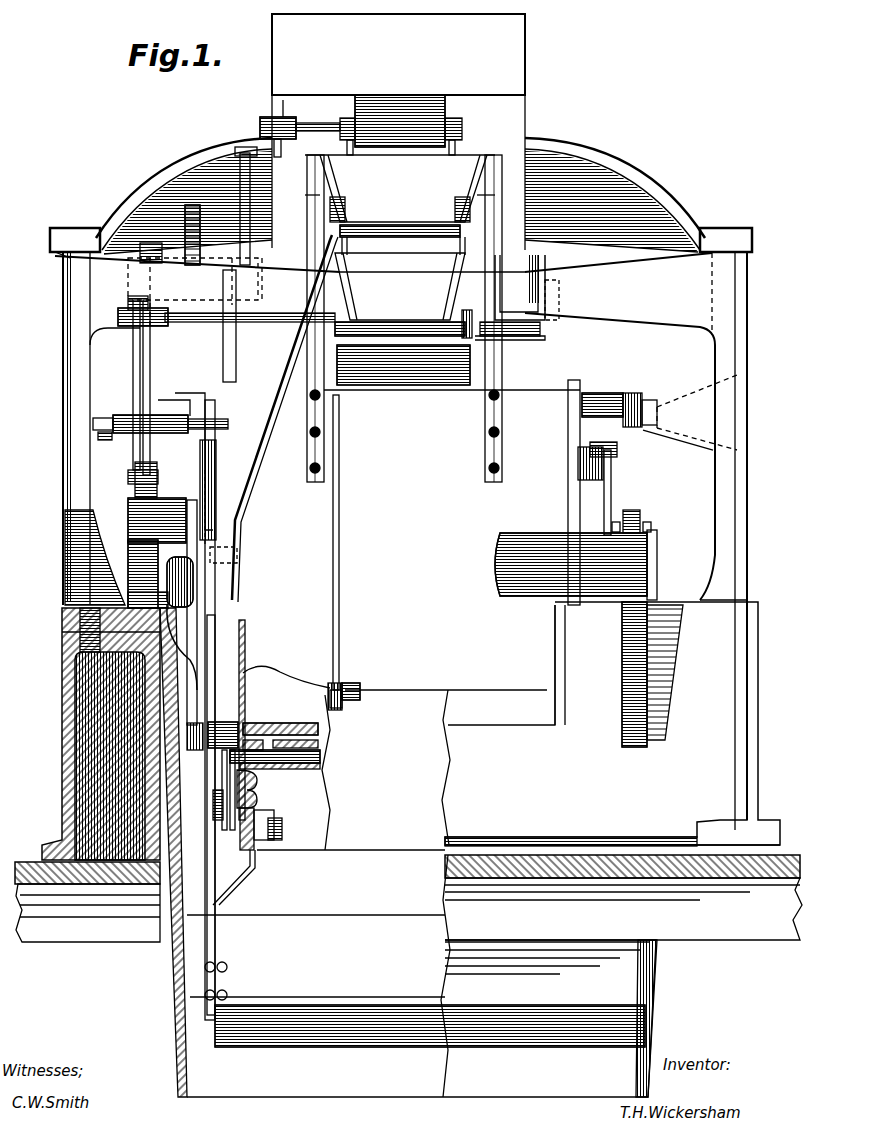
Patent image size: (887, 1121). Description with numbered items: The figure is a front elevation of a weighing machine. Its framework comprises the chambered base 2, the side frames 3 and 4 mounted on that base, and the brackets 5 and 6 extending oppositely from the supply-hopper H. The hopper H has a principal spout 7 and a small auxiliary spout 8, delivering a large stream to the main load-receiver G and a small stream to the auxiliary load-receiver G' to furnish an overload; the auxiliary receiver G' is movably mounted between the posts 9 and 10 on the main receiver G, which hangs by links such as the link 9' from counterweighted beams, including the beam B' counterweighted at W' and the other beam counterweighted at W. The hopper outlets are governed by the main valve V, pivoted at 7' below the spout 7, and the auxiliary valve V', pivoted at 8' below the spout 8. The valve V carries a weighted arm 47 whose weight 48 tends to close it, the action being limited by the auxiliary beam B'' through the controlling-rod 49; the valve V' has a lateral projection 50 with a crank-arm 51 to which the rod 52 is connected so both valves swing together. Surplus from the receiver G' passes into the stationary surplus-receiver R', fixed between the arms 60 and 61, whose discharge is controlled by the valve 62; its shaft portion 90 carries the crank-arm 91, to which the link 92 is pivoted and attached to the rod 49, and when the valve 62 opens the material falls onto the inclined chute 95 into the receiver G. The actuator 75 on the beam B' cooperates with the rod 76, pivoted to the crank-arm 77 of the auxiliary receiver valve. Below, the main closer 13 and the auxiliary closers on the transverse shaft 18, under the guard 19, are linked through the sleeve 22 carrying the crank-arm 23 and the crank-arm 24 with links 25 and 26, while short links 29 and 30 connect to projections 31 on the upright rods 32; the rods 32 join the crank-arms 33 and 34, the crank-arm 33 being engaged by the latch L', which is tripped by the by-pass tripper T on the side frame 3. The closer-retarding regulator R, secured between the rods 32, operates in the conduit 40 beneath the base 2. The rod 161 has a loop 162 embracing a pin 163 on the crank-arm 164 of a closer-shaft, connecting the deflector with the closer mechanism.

The supply-hopper H is at (398, 132).
The auxiliary spout 8 is at (400, 108).
The pivot of auxiliary valve 8' is at (411, 124).
The auxiliary valve V' is at (412, 143).
The lateral projection 50 is at (318, 123).
The crank-arm 51 is at (261, 134).
The rod 52 is at (240, 188).
The bracket 5 is at (156, 185).
The bracket 6 is at (607, 168).
The arm 61 is at (620, 426).
The side frame 4 is at (747, 476).
The side frame 3 is at (66, 432).
The arm 60 is at (108, 290).
The weight 48 is at (140, 246).
The weighted arm 47 is at (180, 250).
The post 9 is at (304, 318).
The post 10 is at (503, 410).
The auxiliary load-receiver G' is at (403, 196).
The crank-arm 77 is at (330, 208).
The surplus-receiver R' is at (400, 294).
The inclined chute 95 is at (420, 372).
The main valve V is at (522, 300).
The principal spout 7 is at (510, 344).
The pivot of main valve 7' is at (563, 295).
The valve 62 is at (470, 338).
The projecting shaft portion 90 is at (246, 330).
The rod 76 is at (285, 372).
The crank-arm 91 is at (188, 322).
The controlling-rod 49 is at (134, 354).
The link 92 is at (150, 372).
The latch L' is at (160, 413).
The by-pass tripper T is at (105, 444).
The auxiliary beam B'' is at (157, 497).
The crank-arm 33 is at (218, 472).
The actuator 75 is at (232, 565).
The counterweight W is at (129, 559).
The link 26 is at (210, 822).
The conduit 40 is at (422, 1006).
The closer-retarding regulator R is at (430, 1010).
The upright rod 32 is at (216, 938).
The main closer 13 is at (399, 727).
The chambered base 2 is at (612, 724).
The counterweight W' is at (559, 565).
The counterweighted beam B' is at (631, 508).
The crank-arm 34 is at (602, 444).
The main load-receiver G is at (452, 458).
The rod 161 is at (333, 585).
The loop 162 is at (345, 704).
The pin 163 is at (330, 688).
The crank-arm 164 is at (358, 688).
The link 9' is at (185, 625).
The sleeve 22 is at (226, 724).
The guard 19 is at (296, 723).
The transverse shaft 18 is at (322, 757).
The link 25 is at (254, 812).
The crank-arm 23 is at (222, 785).
The crank-arm 24 is at (216, 803).
The short link 29 is at (267, 824).
The short link 30 is at (282, 828).
The projection 31 is at (236, 880).